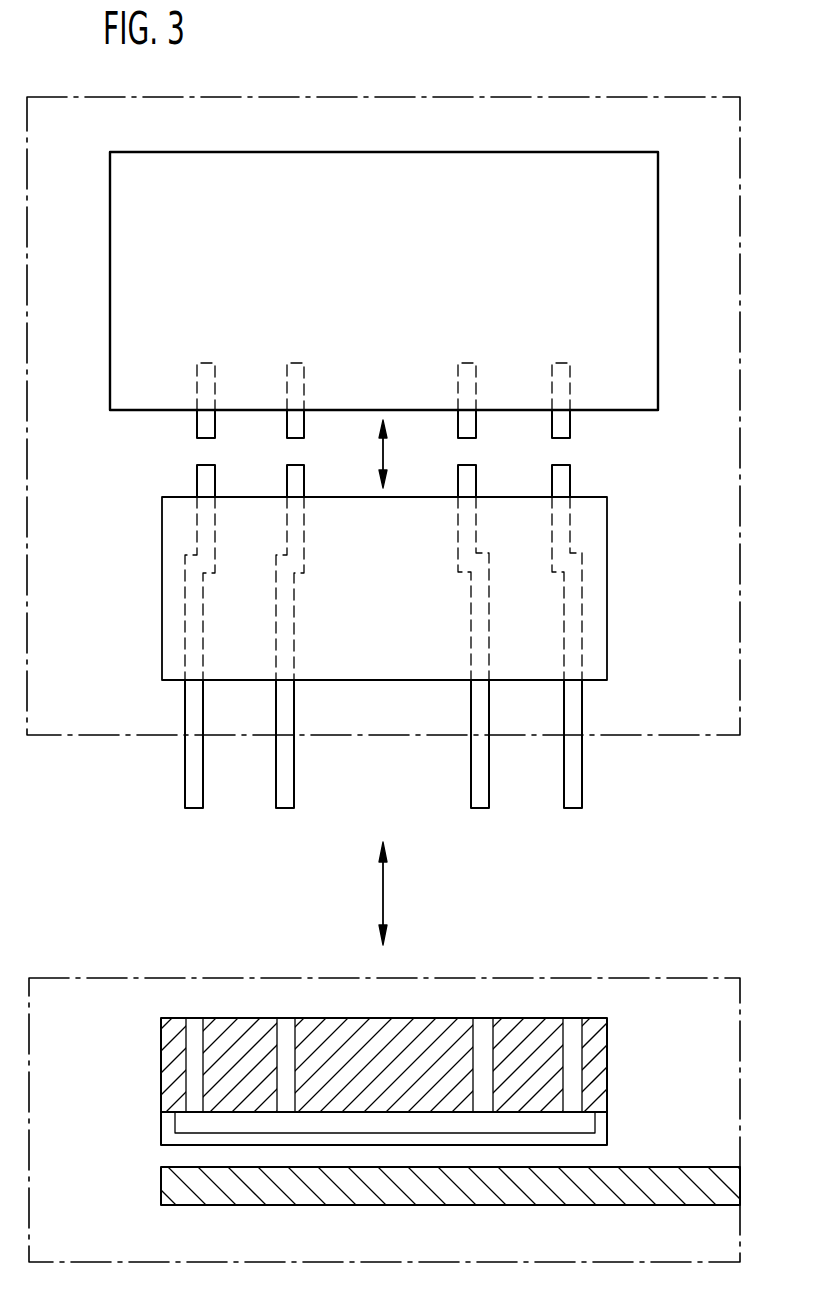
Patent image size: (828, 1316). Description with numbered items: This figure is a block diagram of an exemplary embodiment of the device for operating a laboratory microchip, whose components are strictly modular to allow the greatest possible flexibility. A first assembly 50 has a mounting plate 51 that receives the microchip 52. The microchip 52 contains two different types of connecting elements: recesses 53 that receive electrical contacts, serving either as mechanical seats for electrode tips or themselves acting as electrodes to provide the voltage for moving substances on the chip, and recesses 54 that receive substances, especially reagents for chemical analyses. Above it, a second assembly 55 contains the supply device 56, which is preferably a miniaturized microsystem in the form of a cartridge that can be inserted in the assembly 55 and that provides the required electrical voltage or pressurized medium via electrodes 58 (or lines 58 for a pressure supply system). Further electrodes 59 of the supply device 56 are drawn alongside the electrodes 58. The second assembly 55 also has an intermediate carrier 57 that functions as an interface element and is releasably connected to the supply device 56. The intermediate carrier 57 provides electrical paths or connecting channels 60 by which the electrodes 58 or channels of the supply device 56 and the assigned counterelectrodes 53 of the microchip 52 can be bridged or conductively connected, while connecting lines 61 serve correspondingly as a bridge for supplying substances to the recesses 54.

The first assembly 50 is at (160, 972).
The mounting plate 51 is at (170, 1187).
The microchip 52 is at (590, 1046).
The recesses 53 is at (573, 1025).
The recesses 54 is at (287, 1025).
The second assembly 55 is at (585, 86).
The supply device 56 is at (632, 267).
The intermediate carrier 57 is at (594, 634).
The electrodes 58 is at (205, 432).
The contact pin of upper block 59 is at (297, 432).
The connecting channels 60 is at (205, 478).
The connecting lines 61 is at (295, 478).